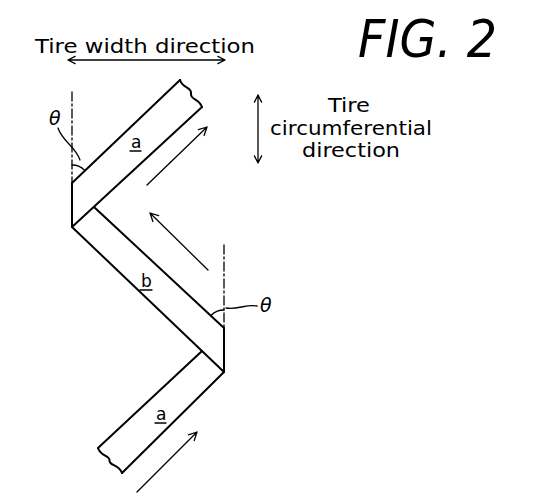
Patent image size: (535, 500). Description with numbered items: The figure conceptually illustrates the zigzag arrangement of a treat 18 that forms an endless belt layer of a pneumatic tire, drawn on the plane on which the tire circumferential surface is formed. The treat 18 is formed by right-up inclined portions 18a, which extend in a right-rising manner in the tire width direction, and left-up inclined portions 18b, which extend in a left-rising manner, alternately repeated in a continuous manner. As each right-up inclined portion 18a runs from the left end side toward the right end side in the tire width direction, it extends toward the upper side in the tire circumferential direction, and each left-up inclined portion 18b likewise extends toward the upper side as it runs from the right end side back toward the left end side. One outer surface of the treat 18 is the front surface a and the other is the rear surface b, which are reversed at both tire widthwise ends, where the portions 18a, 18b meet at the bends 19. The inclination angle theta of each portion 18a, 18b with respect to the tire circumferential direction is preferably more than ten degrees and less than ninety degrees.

The treat 18 is at (217, 305).
The right-up inclined portion 18a is at (113, 160).
The left-up inclined portion 18b is at (163, 308).
The bent portion 19 is at (72, 222).